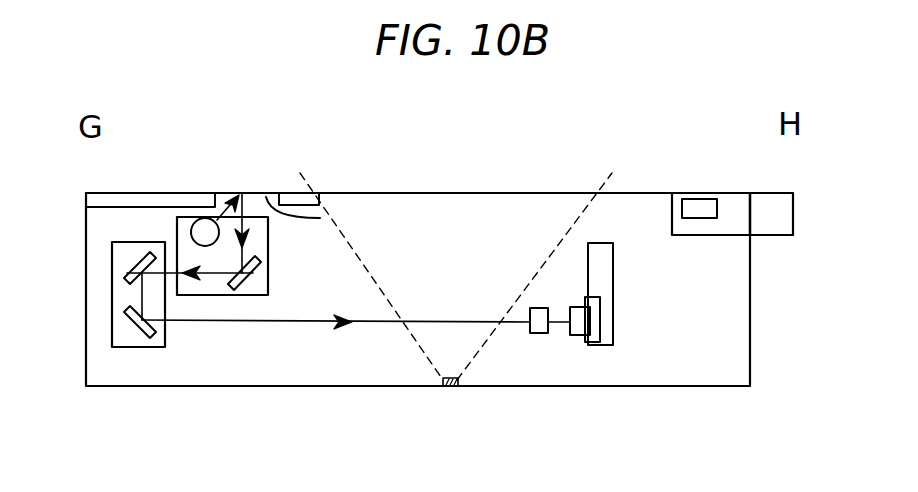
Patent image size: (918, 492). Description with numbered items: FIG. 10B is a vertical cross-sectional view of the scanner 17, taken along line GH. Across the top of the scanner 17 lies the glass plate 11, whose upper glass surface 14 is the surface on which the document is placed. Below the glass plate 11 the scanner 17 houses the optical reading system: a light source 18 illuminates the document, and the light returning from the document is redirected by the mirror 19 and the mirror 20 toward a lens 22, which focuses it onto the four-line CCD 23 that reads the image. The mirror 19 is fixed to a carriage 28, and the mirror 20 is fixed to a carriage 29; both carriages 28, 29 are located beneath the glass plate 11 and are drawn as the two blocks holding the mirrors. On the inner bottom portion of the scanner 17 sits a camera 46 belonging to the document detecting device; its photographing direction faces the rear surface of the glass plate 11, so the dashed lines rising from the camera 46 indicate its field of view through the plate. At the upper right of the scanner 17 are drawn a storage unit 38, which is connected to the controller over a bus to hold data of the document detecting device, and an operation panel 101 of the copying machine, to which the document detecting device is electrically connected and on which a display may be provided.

The glass plate 11 is at (452, 194).
The glass surface 14 is at (346, 194).
The scanner 17 is at (750, 330).
The light source 18 is at (194, 226).
The mirror 19 is at (248, 297).
The mirror 20 is at (130, 272).
The lens 22 is at (540, 333).
The 4-line CCD 23 is at (575, 327).
The carriage 28 is at (218, 297).
The carriage 29 is at (112, 333).
The storage unit 38 is at (693, 207).
The camera 46 is at (447, 387).
The operation panel 101 is at (777, 220).